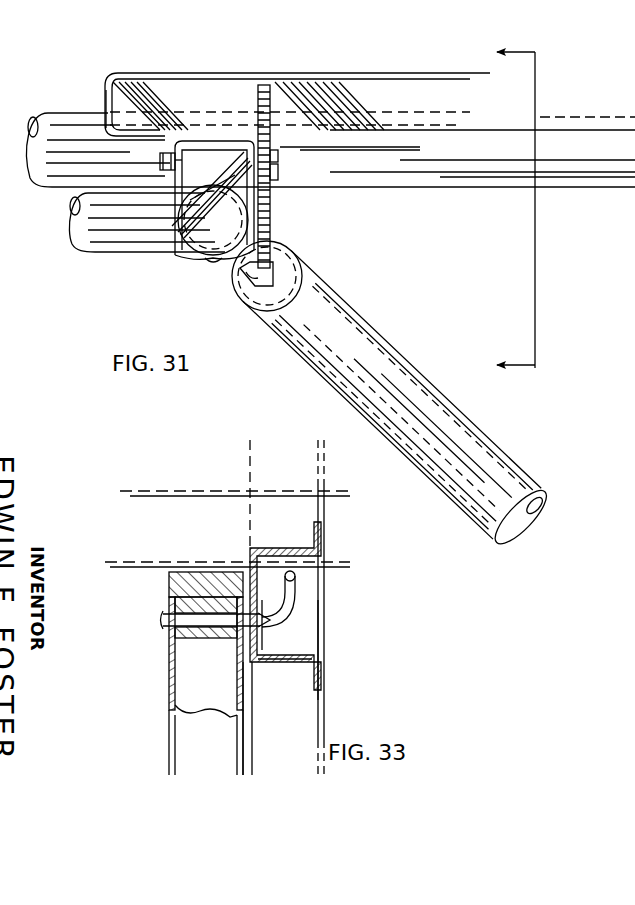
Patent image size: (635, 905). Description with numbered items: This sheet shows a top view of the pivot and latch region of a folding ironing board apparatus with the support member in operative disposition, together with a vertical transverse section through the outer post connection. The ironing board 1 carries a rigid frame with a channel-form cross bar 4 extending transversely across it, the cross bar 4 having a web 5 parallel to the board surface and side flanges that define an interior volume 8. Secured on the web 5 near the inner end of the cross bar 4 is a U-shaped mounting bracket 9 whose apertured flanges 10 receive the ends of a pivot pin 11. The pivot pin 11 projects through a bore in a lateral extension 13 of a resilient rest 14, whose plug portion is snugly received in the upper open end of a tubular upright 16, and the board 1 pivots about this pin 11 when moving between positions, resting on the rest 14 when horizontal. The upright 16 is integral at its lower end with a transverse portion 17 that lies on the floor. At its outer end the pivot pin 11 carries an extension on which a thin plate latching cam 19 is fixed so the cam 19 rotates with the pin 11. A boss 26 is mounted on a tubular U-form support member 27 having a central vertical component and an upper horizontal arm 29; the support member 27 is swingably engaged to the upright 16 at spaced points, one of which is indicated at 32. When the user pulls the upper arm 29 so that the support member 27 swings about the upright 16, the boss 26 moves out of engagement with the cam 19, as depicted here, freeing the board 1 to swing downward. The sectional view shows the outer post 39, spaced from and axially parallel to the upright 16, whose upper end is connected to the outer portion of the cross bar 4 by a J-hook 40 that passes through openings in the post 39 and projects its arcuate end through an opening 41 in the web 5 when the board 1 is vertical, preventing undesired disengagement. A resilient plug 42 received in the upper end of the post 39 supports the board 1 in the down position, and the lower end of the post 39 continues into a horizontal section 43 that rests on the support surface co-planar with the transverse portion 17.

In FIG. 31, the ironing board 1 is at (118, 72).
In FIG. 33, the ironing board 1 is at (325, 668).
In FIG. 31, the cross bar 4 is at (114, 101).
In FIG. 33, the cross bar 4 is at (278, 662).
In FIG. 33, the web 5 is at (250, 554).
In FIG. 33, the interior volume 8 is at (292, 638).
In FIG. 31, the U-shaped mounting bracket 9 is at (193, 138).
In FIG. 31, the flange 10 is at (178, 178).
In FIG. 31, the pivot pin 11 is at (162, 166).
In FIG. 31, the lateral extension 13 is at (205, 212).
In FIG. 31, the resilient rest 14 is at (192, 192).
In FIG. 31, the upright 16 is at (212, 262).
In FIG. 31, the transverse portion 17 is at (90, 250).
In FIG. 31, the latching cam 19 is at (262, 112).
In FIG. 31, the boss 26 is at (270, 270).
In FIG. 31, the support member 27 is at (275, 250).
In FIG. 31, the upper horizontal arm 29 is at (378, 336).
In FIG. 31, the point of swingable engagement 32 is at (506, 209).
In FIG. 33, the post 39 is at (170, 660).
In FIG. 33, the J-hook 40 is at (296, 586).
In FIG. 33, the opening 41 is at (258, 631).
In FIG. 33, the resilient plug 42 is at (192, 571).
In FIG. 31, the horizontal section 43 is at (598, 188).